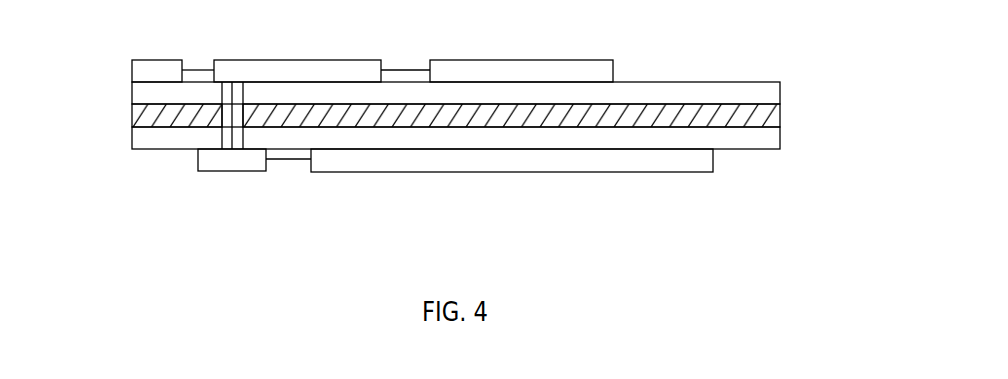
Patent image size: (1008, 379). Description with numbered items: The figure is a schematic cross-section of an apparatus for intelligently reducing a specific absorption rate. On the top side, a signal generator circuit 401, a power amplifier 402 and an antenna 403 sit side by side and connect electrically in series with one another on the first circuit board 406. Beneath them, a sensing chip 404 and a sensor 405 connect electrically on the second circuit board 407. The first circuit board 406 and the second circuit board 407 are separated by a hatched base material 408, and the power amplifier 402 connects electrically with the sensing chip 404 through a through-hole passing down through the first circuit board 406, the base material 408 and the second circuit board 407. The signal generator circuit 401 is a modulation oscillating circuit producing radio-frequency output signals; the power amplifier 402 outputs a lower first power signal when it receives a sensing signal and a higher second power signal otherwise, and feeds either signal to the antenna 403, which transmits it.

The signal generator circuit 401 is at (148, 60).
The power amplifier 402 is at (263, 59).
The antenna 403 is at (557, 59).
The sensing chip 404 is at (232, 171).
The sensor 405 is at (647, 172).
The first circuit board 406 is at (780, 92).
The second circuit board 407 is at (780, 134).
The base material 408 is at (132, 118).